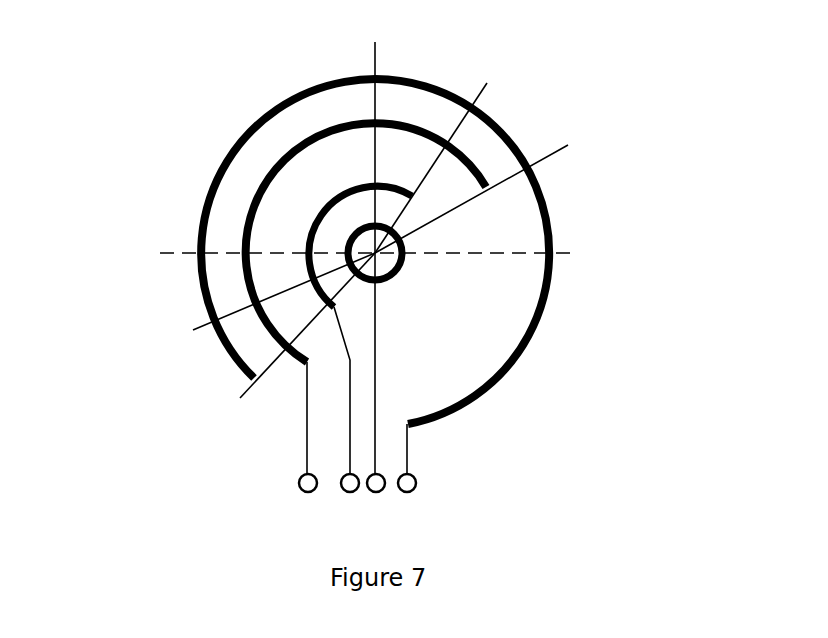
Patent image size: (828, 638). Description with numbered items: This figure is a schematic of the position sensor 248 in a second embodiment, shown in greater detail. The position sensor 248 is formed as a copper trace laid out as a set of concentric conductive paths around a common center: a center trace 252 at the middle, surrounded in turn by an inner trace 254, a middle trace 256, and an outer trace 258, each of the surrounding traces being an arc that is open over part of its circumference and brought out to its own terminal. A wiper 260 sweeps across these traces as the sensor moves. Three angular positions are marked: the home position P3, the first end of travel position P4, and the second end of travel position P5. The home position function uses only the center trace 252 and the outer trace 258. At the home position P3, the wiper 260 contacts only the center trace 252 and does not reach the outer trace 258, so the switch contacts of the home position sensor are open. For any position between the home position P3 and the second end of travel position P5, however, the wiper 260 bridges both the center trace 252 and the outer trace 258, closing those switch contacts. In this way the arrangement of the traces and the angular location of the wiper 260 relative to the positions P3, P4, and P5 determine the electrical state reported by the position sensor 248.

The position sensor 248 is at (585, 73).
The center trace 252 is at (403, 250).
The inner trace 254 is at (332, 193).
The middle trace 256 is at (252, 210).
The outer trace 258 is at (197, 231).
The wiper 260 is at (193, 330).
The home position P3 is at (290, 337).
The first end of travel position P4 is at (447, 141).
The second end of travel position P5 is at (501, 189).